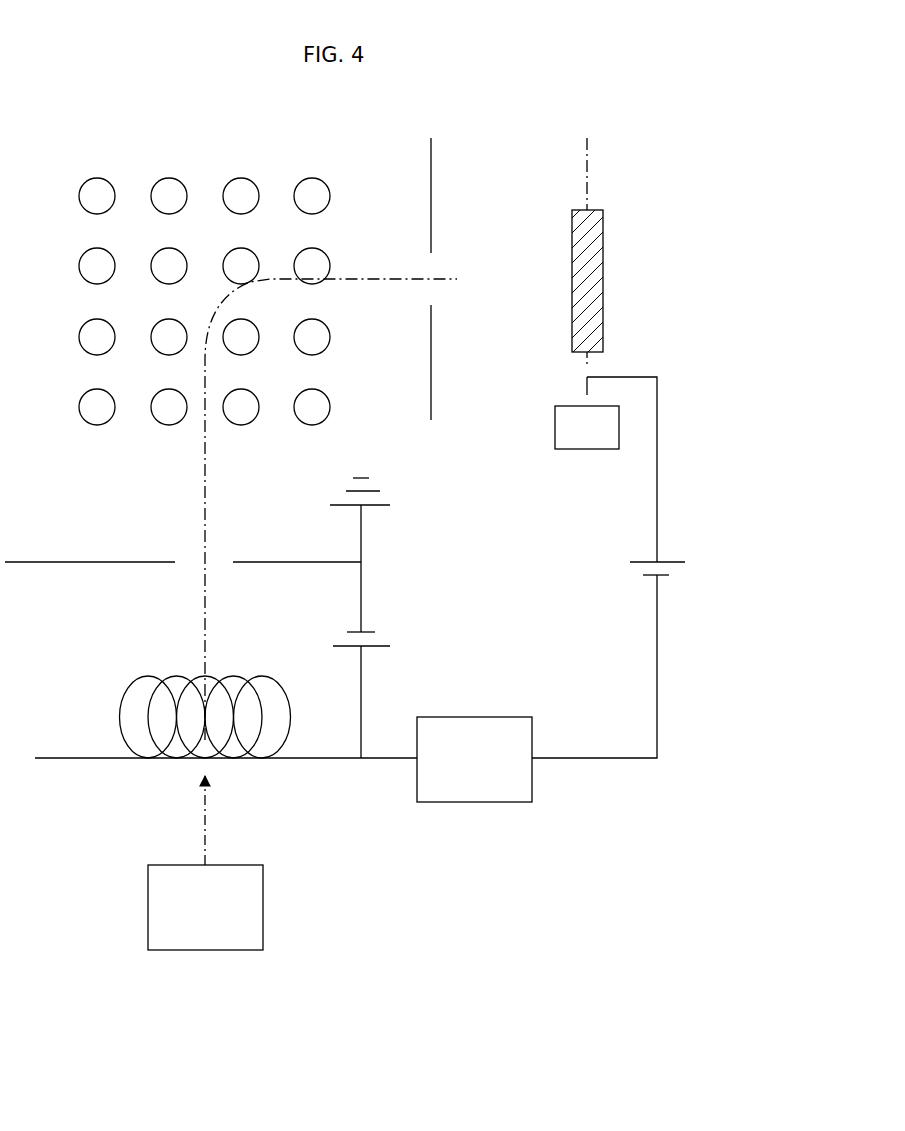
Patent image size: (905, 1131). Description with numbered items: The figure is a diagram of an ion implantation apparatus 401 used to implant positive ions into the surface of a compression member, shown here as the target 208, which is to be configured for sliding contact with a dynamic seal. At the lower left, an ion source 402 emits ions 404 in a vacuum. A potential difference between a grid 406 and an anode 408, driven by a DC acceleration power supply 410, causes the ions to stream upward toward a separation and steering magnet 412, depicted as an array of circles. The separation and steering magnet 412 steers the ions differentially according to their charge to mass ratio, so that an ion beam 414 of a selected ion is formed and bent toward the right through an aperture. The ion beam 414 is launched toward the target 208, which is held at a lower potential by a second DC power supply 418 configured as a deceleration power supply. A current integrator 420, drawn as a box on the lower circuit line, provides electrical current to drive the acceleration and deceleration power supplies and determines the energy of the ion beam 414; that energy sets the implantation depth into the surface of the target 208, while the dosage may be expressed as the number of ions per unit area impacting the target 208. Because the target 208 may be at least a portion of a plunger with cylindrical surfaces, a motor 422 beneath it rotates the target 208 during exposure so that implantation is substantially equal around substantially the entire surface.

The ion implantation apparatus 401 is at (673, 95).
The ion source 402 is at (263, 905).
The ions 404 is at (207, 800).
The grid 406 is at (119, 716).
The anode 408 is at (66, 562).
The DC acceleration power supply 410 is at (388, 632).
The separation and steering magnet 412 is at (98, 150).
The ion beam 414 is at (500, 279).
The target 208 is at (605, 258).
The second DC power supply 418 is at (685, 576).
The current integrator 420 is at (478, 803).
The motor 422 is at (590, 450).